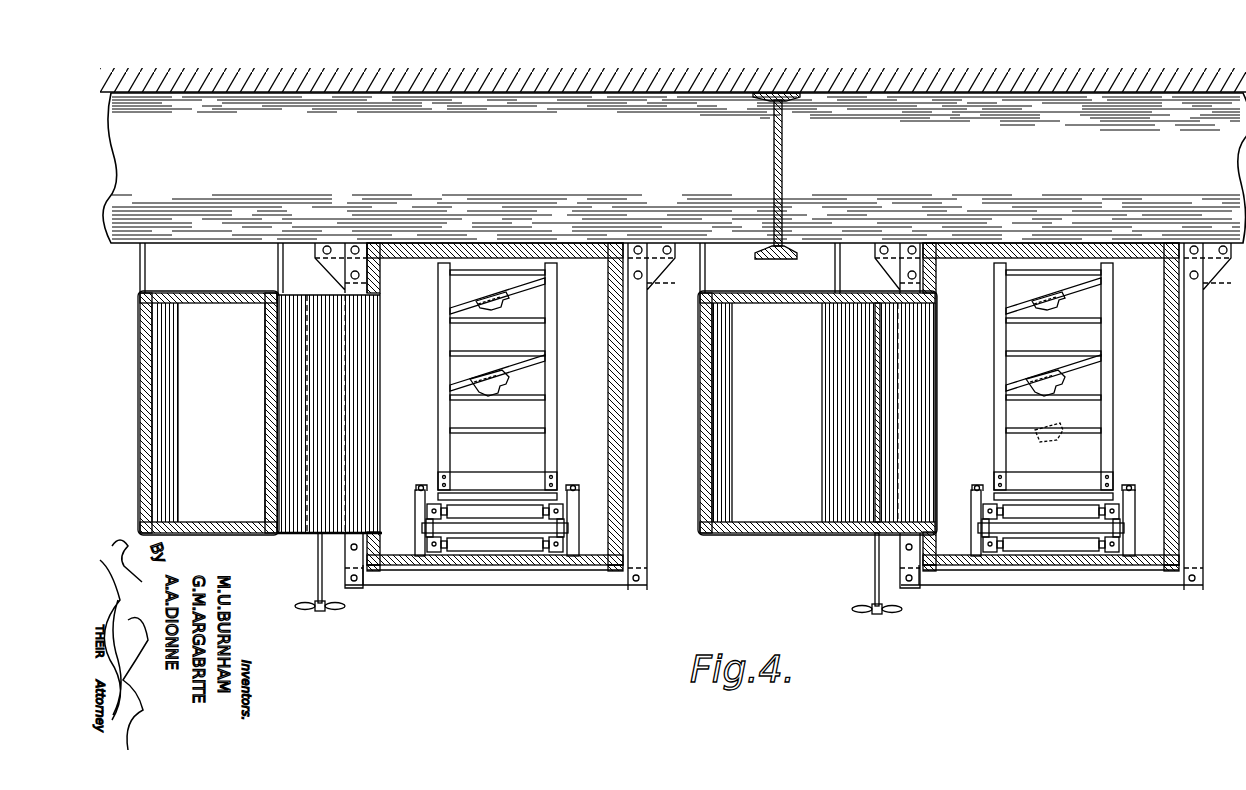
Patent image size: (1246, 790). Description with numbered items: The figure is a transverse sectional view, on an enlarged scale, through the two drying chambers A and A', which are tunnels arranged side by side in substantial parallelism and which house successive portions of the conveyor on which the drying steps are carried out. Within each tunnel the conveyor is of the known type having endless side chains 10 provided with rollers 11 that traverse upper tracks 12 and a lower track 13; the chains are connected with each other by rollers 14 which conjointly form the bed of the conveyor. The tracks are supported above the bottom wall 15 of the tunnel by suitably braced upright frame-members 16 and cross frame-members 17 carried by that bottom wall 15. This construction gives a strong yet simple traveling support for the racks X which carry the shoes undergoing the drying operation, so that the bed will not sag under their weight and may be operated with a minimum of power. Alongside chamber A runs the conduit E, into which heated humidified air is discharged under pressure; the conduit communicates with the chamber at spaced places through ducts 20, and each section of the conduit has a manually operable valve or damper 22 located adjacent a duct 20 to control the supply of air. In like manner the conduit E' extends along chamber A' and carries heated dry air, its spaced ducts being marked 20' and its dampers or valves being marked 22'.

The endless side chains 10 is at (580, 512).
The rollers 11 is at (574, 497).
The upper tracks 12 is at (582, 520).
The lower track 13 is at (433, 553).
The rollers 14 is at (465, 512).
The bottom wall of the tunnel 15 is at (396, 567).
The upright frame-members 16 is at (413, 502).
The cross frame-members 17 is at (522, 530).
The ducts 20 is at (851, 412).
The ducts 20' is at (309, 436).
The damper 22 is at (829, 458).
The damper 22' is at (299, 453).
The drying chamber A is at (1077, 416).
The drying chamber A' is at (495, 416).
The conduit E is at (817, 435).
The conduit E' is at (237, 413).
The racks X is at (550, 353).